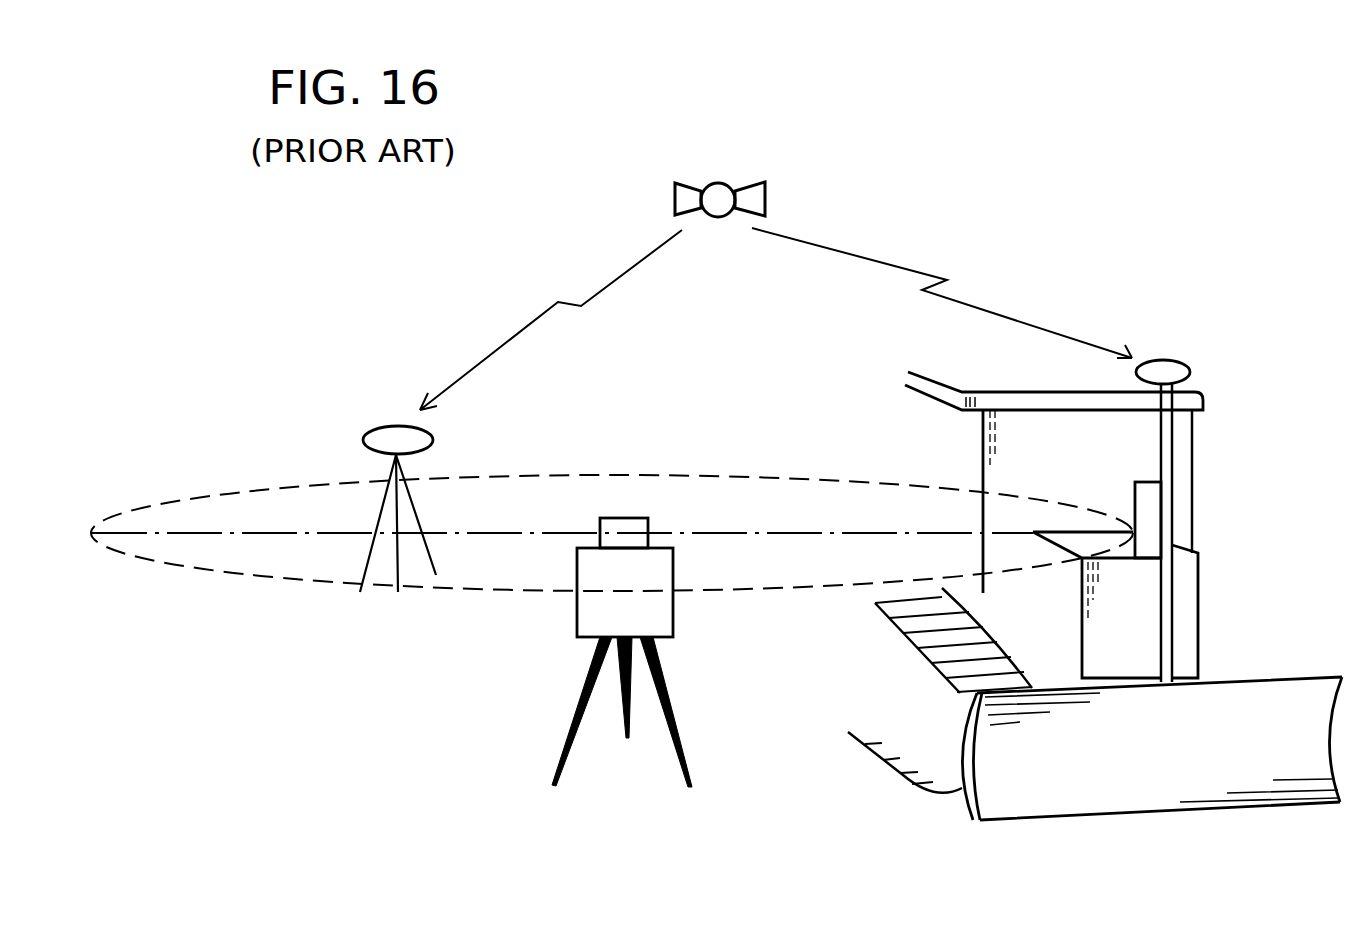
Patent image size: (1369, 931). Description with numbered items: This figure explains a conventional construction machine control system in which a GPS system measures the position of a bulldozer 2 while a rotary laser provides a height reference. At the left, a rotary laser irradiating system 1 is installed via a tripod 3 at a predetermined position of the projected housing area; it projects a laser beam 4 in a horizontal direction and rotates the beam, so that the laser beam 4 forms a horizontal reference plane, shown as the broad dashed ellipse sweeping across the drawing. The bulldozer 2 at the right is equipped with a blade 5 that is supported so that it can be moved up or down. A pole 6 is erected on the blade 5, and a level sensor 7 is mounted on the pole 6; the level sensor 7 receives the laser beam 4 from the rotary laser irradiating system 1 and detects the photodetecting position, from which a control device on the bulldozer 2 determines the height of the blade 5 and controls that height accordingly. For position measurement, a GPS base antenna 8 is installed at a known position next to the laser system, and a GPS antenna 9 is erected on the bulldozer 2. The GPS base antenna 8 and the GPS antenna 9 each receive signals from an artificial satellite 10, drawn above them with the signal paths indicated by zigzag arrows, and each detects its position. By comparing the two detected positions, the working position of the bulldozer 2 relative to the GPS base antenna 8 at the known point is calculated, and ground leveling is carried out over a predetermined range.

The rotary laser irradiating system 1 is at (628, 500).
The bulldozer 2 is at (1135, 316).
The tripod 3 is at (575, 708).
The laser beam 4 is at (740, 532).
The blade 5 is at (1258, 678).
The pole 6 is at (1180, 438).
The level sensor 7 is at (1135, 495).
The GPS base antenna 8 is at (390, 426).
The GPS antenna 9 is at (1170, 360).
The artificial satellite 10 is at (722, 183).